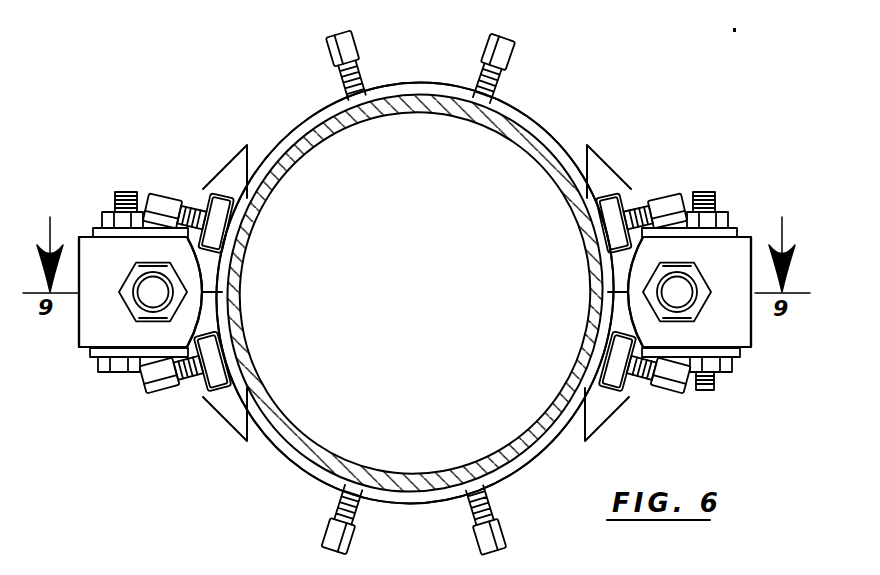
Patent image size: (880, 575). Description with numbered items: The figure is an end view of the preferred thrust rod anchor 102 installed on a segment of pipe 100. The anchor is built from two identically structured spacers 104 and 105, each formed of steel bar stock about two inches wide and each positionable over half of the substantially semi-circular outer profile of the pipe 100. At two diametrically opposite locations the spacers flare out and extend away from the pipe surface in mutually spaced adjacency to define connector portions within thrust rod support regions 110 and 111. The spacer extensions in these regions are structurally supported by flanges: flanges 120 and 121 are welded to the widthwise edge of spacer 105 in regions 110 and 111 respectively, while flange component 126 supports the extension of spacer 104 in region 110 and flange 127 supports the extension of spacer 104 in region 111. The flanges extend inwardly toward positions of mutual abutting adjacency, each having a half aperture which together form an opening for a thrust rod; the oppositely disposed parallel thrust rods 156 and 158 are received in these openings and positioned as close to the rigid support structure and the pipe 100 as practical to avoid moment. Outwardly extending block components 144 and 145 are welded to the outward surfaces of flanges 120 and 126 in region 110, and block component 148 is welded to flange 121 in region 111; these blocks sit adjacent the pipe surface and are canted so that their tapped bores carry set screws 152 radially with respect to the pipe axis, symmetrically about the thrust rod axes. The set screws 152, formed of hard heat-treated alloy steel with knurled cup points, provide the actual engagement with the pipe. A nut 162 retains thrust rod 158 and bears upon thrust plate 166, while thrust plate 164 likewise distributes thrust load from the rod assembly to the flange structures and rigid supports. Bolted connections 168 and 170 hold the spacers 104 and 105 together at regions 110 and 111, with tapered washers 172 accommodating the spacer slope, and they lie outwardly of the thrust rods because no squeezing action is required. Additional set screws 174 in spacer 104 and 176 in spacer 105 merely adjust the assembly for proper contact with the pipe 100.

The pipe segment 100 is at (314, 145).
The thrust rod anchor 102 is at (392, 65).
The spacer 104 is at (413, 85).
The spacer 105 is at (405, 505).
The thrust rod support region 110 is at (100, 184).
The thrust rod support region 111 is at (746, 185).
The flange 120 is at (232, 420).
The flange 121 is at (598, 418).
The flange component 126 is at (233, 173).
The flange 127 is at (605, 178).
The block component 144 is at (216, 385).
The block component 145 is at (212, 200).
The block component 148 is at (625, 382).
The set screw 152 is at (160, 198).
The thrust rod 156 is at (152, 292).
The thrust rod 158 is at (678, 292).
The nut 162 is at (138, 311).
The thrust plate 164 is at (93, 333).
The thrust plate 166 is at (749, 237).
The bolted connection 168 is at (113, 372).
The bolted connection 170 is at (715, 385).
The tapered washer 172 is at (97, 228).
The set screw 174 is at (332, 48).
The set screw 176 is at (325, 540).